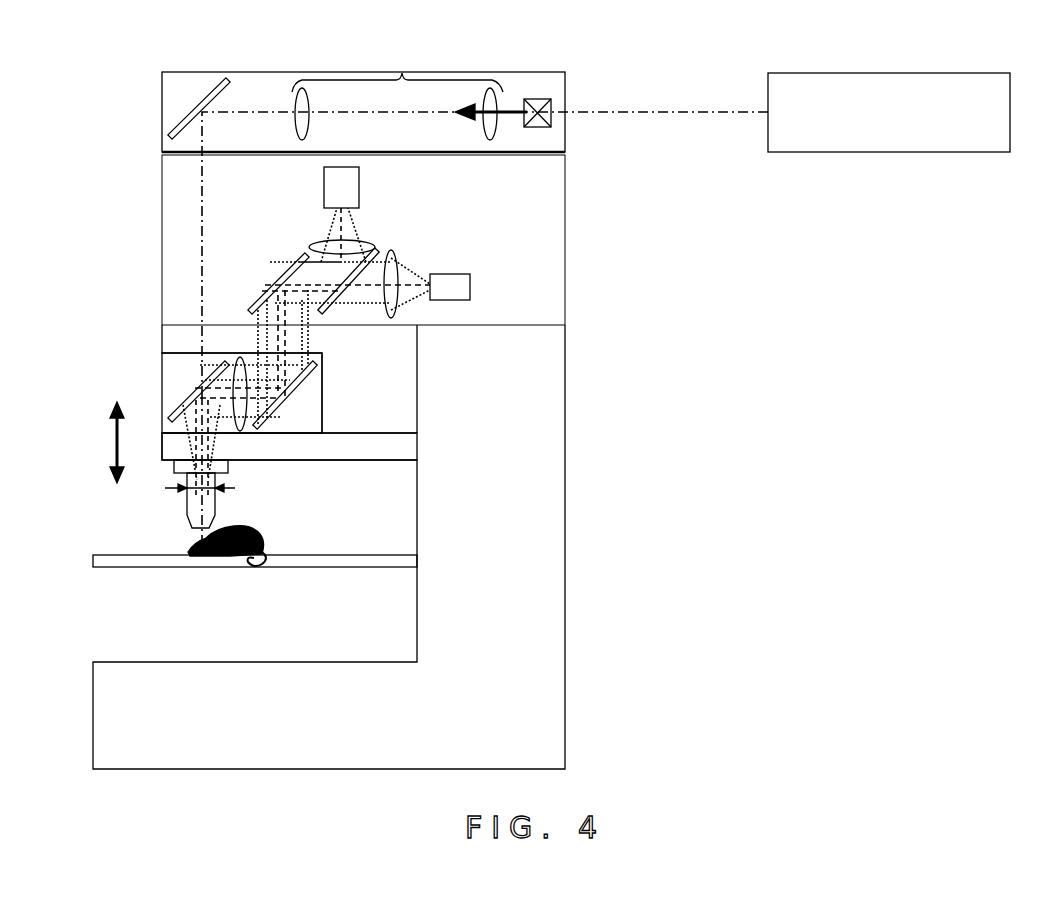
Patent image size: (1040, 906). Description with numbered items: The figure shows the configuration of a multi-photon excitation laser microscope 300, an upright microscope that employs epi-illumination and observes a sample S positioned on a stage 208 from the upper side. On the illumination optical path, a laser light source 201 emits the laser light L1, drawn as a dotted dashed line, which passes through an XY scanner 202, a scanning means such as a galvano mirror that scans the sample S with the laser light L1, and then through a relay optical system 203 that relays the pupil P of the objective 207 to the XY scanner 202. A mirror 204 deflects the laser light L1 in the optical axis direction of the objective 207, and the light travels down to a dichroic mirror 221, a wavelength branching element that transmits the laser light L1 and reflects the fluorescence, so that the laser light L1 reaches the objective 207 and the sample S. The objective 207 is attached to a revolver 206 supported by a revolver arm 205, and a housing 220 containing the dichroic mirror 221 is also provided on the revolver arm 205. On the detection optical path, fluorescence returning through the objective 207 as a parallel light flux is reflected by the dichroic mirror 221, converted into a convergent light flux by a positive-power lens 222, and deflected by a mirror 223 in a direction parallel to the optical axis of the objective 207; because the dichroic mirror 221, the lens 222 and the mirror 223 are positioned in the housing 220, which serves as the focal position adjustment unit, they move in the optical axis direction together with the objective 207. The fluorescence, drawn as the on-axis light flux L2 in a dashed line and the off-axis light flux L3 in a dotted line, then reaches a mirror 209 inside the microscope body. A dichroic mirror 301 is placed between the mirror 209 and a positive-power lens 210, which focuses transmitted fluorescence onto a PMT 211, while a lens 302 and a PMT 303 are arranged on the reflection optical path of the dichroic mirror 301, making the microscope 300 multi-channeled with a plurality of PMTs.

The multi-photon excitation laser microscope 300 is at (982, 59).
The laser light source 201 is at (818, 73).
The laser light L1 is at (635, 112).
The XY scanner 202 is at (540, 99).
The relay optical system 203 is at (397, 95).
The mirror 204 is at (206, 90).
The PMT 303 is at (324, 180).
The lens 302 is at (309, 247).
The mirror 209 is at (275, 294).
The dichroic mirror 301 is at (377, 250).
The lens 210 is at (391, 258).
The PMT 211 is at (470, 286).
The on-axis light flux L2 is at (283, 313).
The off-axis light flux L3 is at (307, 340).
The housing 220 is at (150, 375).
The dichroic mirror 221 is at (181, 407).
The lens 222 is at (238, 370).
The mirror 223 is at (283, 408).
The revolver arm 205 is at (162, 445).
The revolver 206 is at (174, 468).
The objective 207 is at (187, 497).
The pupil P is at (235, 488).
The sample S is at (248, 532).
The stage 208 is at (96, 560).